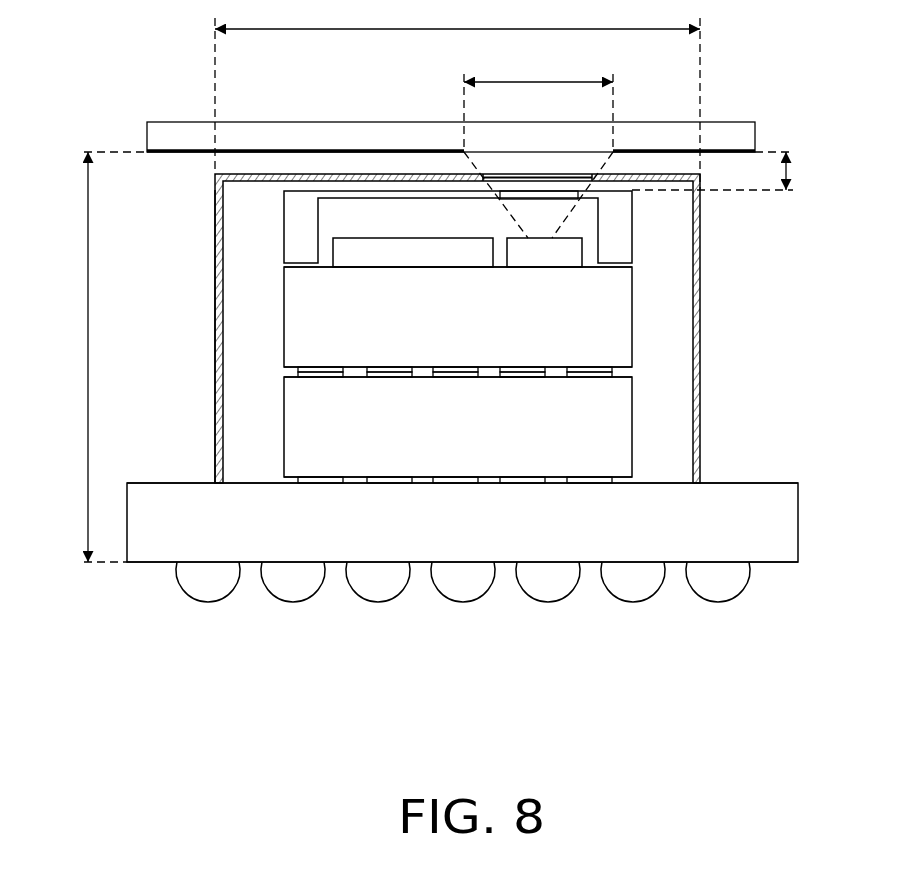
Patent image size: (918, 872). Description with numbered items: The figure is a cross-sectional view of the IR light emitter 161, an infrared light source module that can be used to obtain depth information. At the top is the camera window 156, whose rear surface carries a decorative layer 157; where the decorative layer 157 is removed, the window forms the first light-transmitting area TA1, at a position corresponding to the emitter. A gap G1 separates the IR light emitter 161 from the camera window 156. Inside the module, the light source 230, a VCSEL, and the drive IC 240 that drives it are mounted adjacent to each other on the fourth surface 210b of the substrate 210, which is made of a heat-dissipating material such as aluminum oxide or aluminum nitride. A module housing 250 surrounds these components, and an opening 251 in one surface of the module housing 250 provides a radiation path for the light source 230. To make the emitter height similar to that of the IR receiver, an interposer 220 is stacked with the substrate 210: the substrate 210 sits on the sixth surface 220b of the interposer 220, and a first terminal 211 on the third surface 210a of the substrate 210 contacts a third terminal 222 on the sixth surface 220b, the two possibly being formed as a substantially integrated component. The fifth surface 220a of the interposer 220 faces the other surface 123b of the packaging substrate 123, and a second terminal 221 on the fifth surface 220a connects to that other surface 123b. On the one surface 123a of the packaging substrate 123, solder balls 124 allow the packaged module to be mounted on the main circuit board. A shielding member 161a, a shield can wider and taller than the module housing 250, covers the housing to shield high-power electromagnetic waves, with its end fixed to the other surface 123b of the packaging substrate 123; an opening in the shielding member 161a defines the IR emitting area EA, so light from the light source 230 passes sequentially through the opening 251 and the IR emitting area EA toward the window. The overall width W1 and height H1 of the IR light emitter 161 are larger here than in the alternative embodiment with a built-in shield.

The packaging substrate 123 is at (155, 532).
The one surface of packaging substrate 123a is at (165, 563).
The other surface of packaging substrate 123b is at (167, 483).
The solder ball 124 is at (212, 587).
The camera window 156 is at (733, 131).
The decorative layer 157 is at (172, 151).
The IR light emitter 161 is at (186, 292).
The shielding member 161a is at (217, 347).
The substrate 210 is at (605, 320).
The third surface 210a is at (597, 367).
The fourth surface 210b is at (613, 268).
The first terminal 211 is at (315, 377).
The interposer 220 is at (597, 432).
The fifth surface 220a is at (600, 477).
The sixth surface 220b is at (613, 380).
The second terminal 221 is at (587, 480).
The third terminal 222 is at (523, 377).
The light source 230 is at (533, 257).
The drive IC 240 is at (405, 253).
The module housing 250 is at (300, 222).
The opening 251 is at (542, 195).
The IR emitting area EA is at (547, 173).
The first light-transmitting area TA1 is at (538, 145).
The width of IR light emitter W1 is at (457, 95).
The height of IR light emitter H1 is at (97, 357).
The gap between IR light emitter and camera window G1 is at (725, 171).